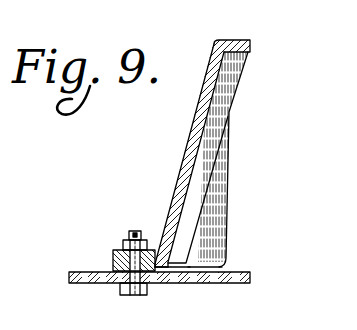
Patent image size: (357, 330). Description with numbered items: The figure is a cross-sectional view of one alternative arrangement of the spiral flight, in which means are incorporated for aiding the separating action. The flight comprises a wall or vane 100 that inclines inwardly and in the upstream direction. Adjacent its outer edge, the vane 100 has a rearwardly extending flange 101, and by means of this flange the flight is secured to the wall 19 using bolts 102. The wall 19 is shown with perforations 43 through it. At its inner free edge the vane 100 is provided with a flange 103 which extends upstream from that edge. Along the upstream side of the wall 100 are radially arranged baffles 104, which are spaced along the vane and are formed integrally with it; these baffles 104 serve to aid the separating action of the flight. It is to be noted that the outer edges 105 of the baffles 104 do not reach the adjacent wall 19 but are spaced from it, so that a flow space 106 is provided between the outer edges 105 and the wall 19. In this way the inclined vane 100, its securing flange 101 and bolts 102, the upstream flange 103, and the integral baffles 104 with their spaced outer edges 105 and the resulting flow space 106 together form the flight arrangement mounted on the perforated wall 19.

The wall or vane 100 is at (178, 173).
The rearwardly extending flange 101 is at (118, 265).
The bolts 102 is at (136, 262).
The flange 103 is at (238, 42).
The radially arranged baffles 104 is at (215, 195).
The outer edges of the baffles 105 is at (205, 267).
The flow space 106 is at (180, 268).
The wall 19 is at (193, 283).
The perforations 43 is at (225, 283).